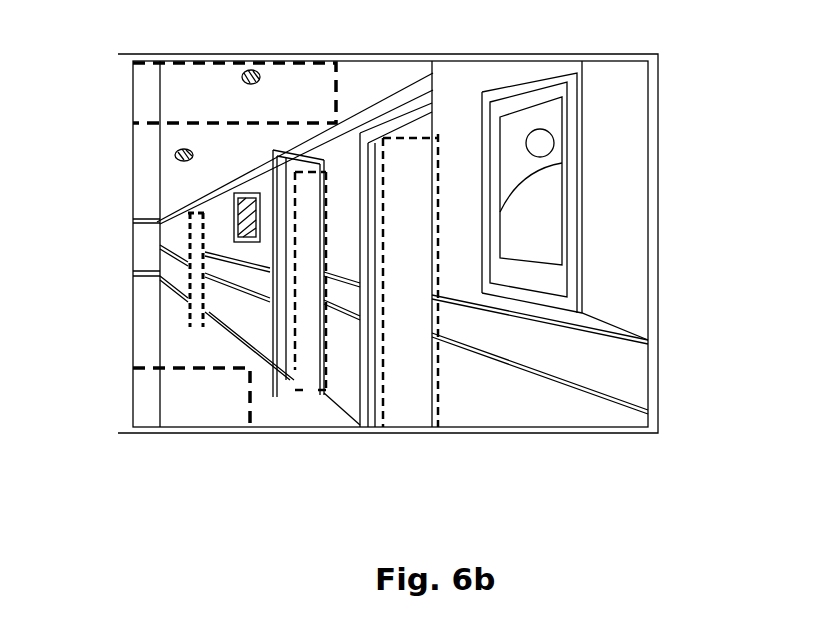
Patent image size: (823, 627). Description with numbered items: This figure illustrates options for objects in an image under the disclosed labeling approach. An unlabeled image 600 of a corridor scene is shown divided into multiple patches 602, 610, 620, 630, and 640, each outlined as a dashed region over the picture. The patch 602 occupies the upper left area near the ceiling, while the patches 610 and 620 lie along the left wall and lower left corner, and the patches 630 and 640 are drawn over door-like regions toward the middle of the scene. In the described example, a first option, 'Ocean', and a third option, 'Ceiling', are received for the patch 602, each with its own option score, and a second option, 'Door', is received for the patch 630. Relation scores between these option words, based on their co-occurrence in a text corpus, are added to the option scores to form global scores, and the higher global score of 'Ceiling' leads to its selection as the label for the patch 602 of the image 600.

The image 600 is at (585, 120).
The patch 602 is at (238, 118).
The patch 610 is at (183, 267).
The patch 620 is at (207, 377).
The patch 630 is at (297, 357).
The patch 640 is at (398, 417).